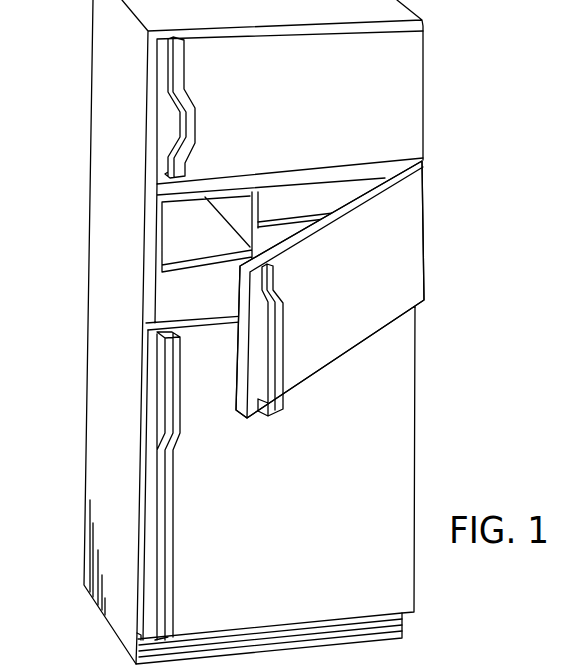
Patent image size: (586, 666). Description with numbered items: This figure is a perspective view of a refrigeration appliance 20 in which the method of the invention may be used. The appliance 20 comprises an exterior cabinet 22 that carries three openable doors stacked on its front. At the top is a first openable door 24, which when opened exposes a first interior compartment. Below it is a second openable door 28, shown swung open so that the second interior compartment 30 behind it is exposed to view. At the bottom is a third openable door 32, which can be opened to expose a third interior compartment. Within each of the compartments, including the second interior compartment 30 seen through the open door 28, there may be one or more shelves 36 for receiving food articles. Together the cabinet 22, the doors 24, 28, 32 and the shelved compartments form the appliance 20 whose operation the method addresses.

The refrigeration appliance 20 is at (424, 357).
The exterior cabinet 22 is at (107, 443).
The first openable door 24 is at (405, 52).
The second openable door 28 is at (408, 253).
The second interior compartment 30 is at (270, 207).
The third openable door 32 is at (398, 480).
The shelves 36 is at (313, 215).